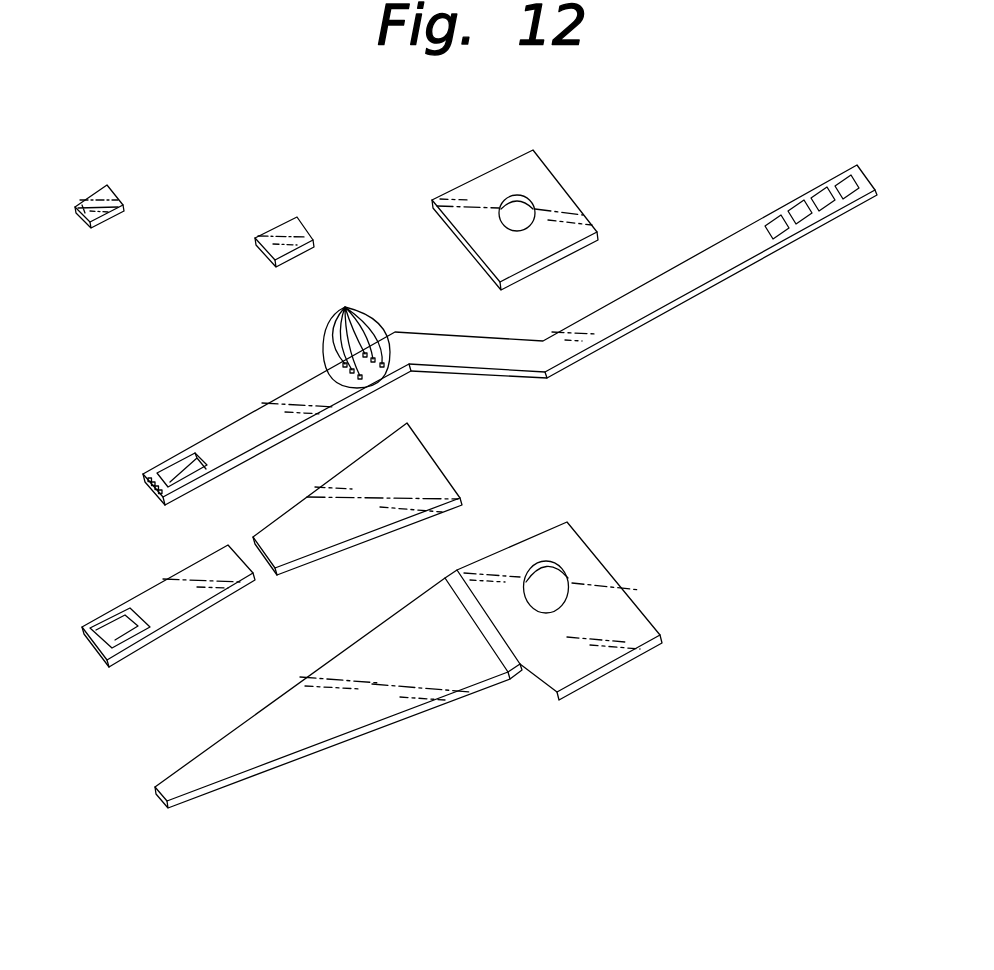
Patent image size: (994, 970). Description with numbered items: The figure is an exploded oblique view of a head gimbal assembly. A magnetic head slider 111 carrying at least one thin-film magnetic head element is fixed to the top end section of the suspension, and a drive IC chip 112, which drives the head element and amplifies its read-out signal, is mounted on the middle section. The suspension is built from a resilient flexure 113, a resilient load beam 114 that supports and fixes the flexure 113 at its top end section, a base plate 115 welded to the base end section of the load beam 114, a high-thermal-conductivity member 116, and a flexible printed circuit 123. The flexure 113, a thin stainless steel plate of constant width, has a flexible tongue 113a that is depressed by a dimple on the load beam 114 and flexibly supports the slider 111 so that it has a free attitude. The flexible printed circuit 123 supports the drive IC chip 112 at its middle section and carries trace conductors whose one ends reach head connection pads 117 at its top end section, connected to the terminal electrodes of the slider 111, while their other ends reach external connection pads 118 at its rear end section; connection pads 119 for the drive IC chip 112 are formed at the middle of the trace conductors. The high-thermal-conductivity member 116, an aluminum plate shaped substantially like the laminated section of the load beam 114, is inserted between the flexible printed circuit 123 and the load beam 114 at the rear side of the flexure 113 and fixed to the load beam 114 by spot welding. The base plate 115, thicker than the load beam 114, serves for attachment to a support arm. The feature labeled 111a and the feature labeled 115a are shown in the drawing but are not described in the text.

The magnetic head slider 111 is at (112, 195).
The head element 111a is at (92, 200).
The drive IC chip 112 is at (280, 227).
The flexure 113 is at (155, 590).
The flexible tongue 113a is at (112, 632).
The load beam 114 is at (458, 680).
The base plate 115 is at (528, 200).
The mounting hole 115a is at (503, 212).
The high-thermal-conductivity member 116 is at (408, 450).
The head connection pads 117 is at (150, 490).
The external connection pads 118 is at (842, 184).
The connection pads for the drive IC chip 119 is at (356, 328).
The flexible printed circuit 123 is at (471, 323).